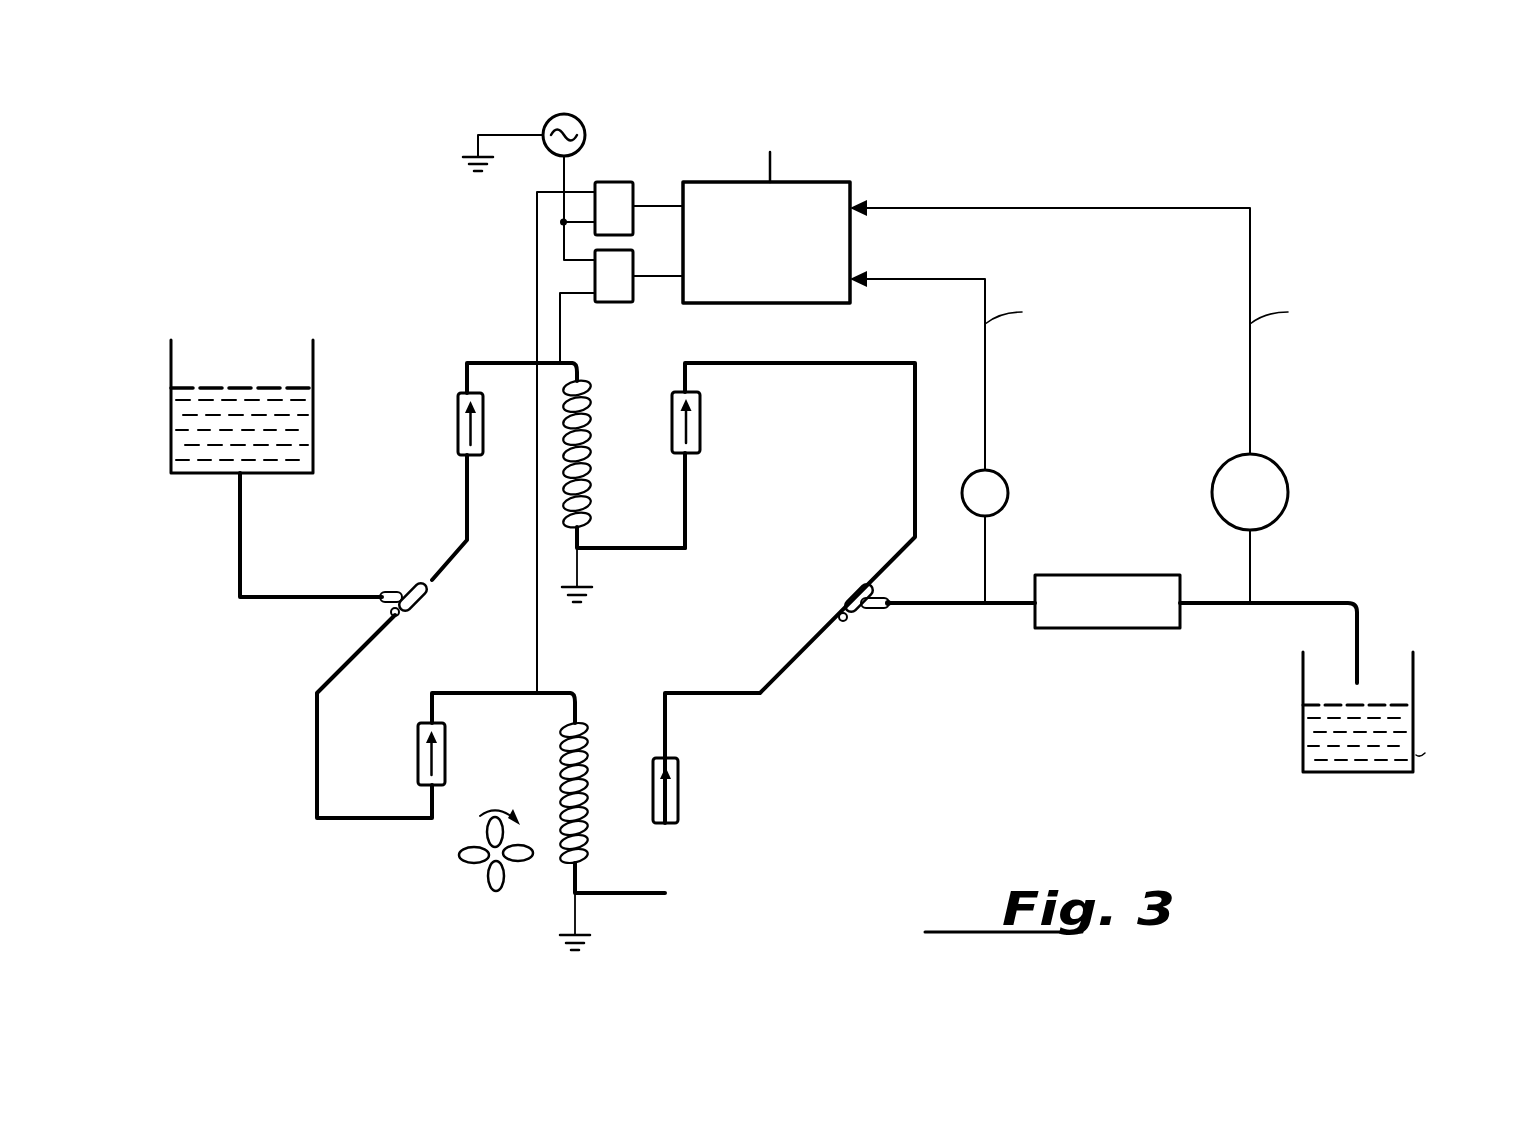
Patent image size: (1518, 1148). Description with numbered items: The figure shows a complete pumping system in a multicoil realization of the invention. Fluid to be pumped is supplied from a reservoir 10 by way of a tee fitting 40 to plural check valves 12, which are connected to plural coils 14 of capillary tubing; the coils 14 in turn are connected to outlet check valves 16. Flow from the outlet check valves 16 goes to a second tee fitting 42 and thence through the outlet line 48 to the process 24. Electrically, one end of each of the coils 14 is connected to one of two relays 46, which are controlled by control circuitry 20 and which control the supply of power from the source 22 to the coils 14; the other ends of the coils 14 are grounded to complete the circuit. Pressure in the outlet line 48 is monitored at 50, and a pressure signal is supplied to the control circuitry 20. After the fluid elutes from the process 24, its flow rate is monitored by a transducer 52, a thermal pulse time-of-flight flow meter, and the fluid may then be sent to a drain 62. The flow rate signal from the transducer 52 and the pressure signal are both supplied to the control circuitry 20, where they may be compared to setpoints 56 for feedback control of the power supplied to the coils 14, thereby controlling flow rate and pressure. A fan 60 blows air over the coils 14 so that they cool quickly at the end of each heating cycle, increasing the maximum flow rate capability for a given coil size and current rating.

The reservoir 10 is at (170, 372).
The check valves 12 is at (462, 422).
The coils 14 is at (592, 453).
The outlet check valves 16 is at (693, 435).
The control circuitry 20 is at (797, 285).
The source 22 is at (544, 129).
The process 24 is at (1077, 620).
The tee fitting 40 is at (403, 595).
The second tee fitting 42 is at (870, 605).
The relays 46 is at (623, 183).
The outlet line 48 is at (950, 603).
The pressure monitor 50 is at (996, 485).
The transducer 52 is at (1278, 496).
The setpoints 56 is at (830, 130).
The fan 60 is at (472, 858).
The drain 62 is at (1303, 735).